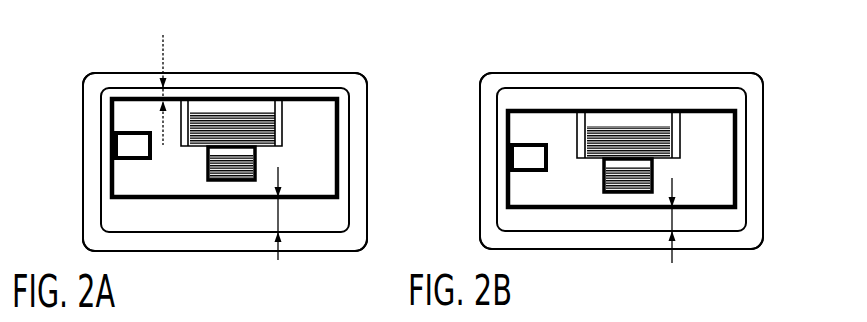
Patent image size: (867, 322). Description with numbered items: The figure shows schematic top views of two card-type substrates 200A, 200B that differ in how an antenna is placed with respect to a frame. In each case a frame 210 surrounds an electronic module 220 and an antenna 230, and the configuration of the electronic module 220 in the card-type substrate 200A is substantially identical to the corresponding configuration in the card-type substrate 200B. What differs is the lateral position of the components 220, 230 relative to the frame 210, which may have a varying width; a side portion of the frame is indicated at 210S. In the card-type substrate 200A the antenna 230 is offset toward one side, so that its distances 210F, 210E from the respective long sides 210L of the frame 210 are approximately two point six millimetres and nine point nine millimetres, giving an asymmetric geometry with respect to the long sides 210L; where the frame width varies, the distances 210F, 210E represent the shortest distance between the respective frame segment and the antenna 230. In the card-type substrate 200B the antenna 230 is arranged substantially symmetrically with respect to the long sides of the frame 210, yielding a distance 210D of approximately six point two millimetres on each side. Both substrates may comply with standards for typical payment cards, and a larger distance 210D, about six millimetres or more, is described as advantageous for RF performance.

In FIG. 2A, the card-type substrate 200A is at (404, 70).
In FIG. 2B, the card-type substrate 200B is at (813, 49).
In FIG. 2A, the frame 210 is at (311, 72).
In FIG. 2B, the frame 210 is at (710, 72).
In FIG. 2A, the side wall of housing 210S is at (83, 128).
In FIG. 2A, the long sides 210L is at (167, 252).
In FIG. 2A, the distance 210F is at (166, 92).
In FIG. 2A, the distance 210E is at (281, 213).
In FIG. 2B, the distance 210D is at (673, 219).
In FIG. 2A, the electronic module 220 is at (134, 131).
In FIG. 2A, the antenna 230 is at (111, 191).